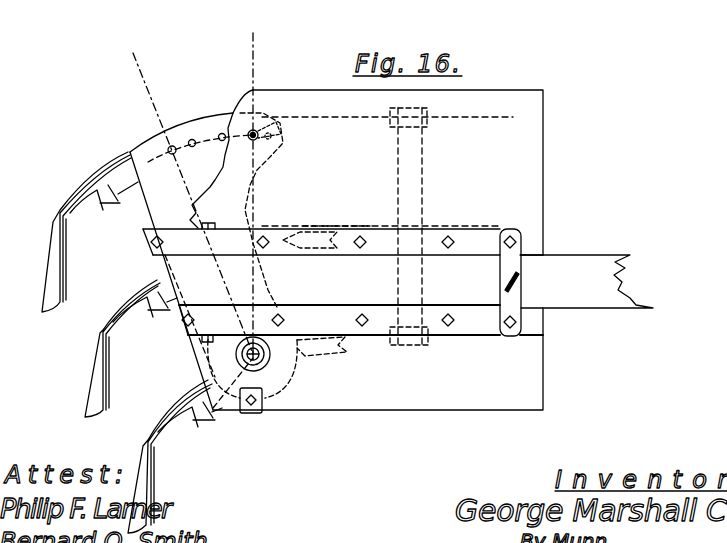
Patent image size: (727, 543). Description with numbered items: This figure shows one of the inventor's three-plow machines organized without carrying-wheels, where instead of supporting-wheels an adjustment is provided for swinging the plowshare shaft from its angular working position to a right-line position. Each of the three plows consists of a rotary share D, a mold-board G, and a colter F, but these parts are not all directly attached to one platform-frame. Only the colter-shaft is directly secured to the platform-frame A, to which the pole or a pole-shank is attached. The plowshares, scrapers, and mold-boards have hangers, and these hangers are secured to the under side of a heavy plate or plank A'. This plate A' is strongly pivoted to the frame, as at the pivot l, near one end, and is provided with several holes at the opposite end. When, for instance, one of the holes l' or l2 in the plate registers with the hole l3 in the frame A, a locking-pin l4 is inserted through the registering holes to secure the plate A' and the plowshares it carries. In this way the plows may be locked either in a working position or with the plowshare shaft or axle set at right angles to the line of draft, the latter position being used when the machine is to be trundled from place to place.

The platform-frame A is at (398, 251).
The plate or plank A' is at (181, 261).
The rotary share D is at (146, 314).
The mold-board G is at (143, 504).
The colter F is at (487, 116).
The pivot l is at (215, 215).
The hole l' is at (211, 158).
The hole l2 is at (170, 148).
The hole in the frame l3 is at (257, 132).
The locking-pin l4 is at (256, 138).